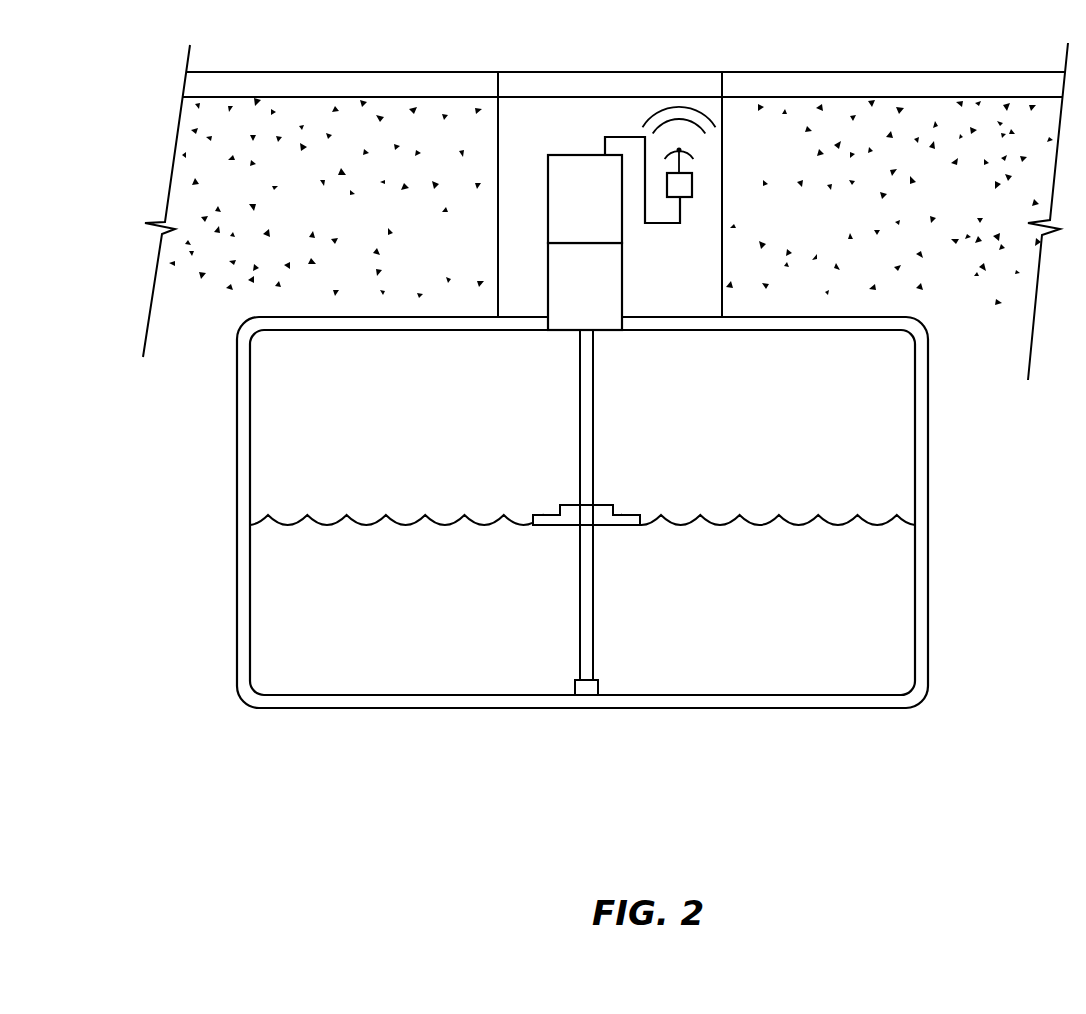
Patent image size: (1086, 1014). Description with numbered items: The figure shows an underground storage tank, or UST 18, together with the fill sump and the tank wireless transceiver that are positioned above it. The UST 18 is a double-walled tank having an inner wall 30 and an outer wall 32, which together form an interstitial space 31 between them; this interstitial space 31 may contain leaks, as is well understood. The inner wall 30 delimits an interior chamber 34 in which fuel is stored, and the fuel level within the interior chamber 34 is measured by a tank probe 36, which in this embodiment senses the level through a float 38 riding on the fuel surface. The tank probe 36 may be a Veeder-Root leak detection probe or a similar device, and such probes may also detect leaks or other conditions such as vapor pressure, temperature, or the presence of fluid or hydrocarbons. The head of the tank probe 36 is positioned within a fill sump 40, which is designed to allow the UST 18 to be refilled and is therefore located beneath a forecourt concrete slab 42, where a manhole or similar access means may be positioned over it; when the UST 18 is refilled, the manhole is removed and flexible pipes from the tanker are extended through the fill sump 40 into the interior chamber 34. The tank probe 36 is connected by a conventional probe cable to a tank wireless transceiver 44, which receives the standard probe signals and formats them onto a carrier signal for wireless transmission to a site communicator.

The UST 18 is at (620, 566).
The inner wall 30 is at (620, 512).
The interstitial space 31 is at (921, 465).
The outer wall 32 is at (928, 635).
The interior chamber 34 is at (831, 414).
The tank probe 36 is at (573, 155).
The float 38 is at (607, 505).
The fill sump 40 is at (498, 225).
The forecourt concrete slab 42 is at (808, 72).
The tank wireless transceiver 44 is at (693, 187).